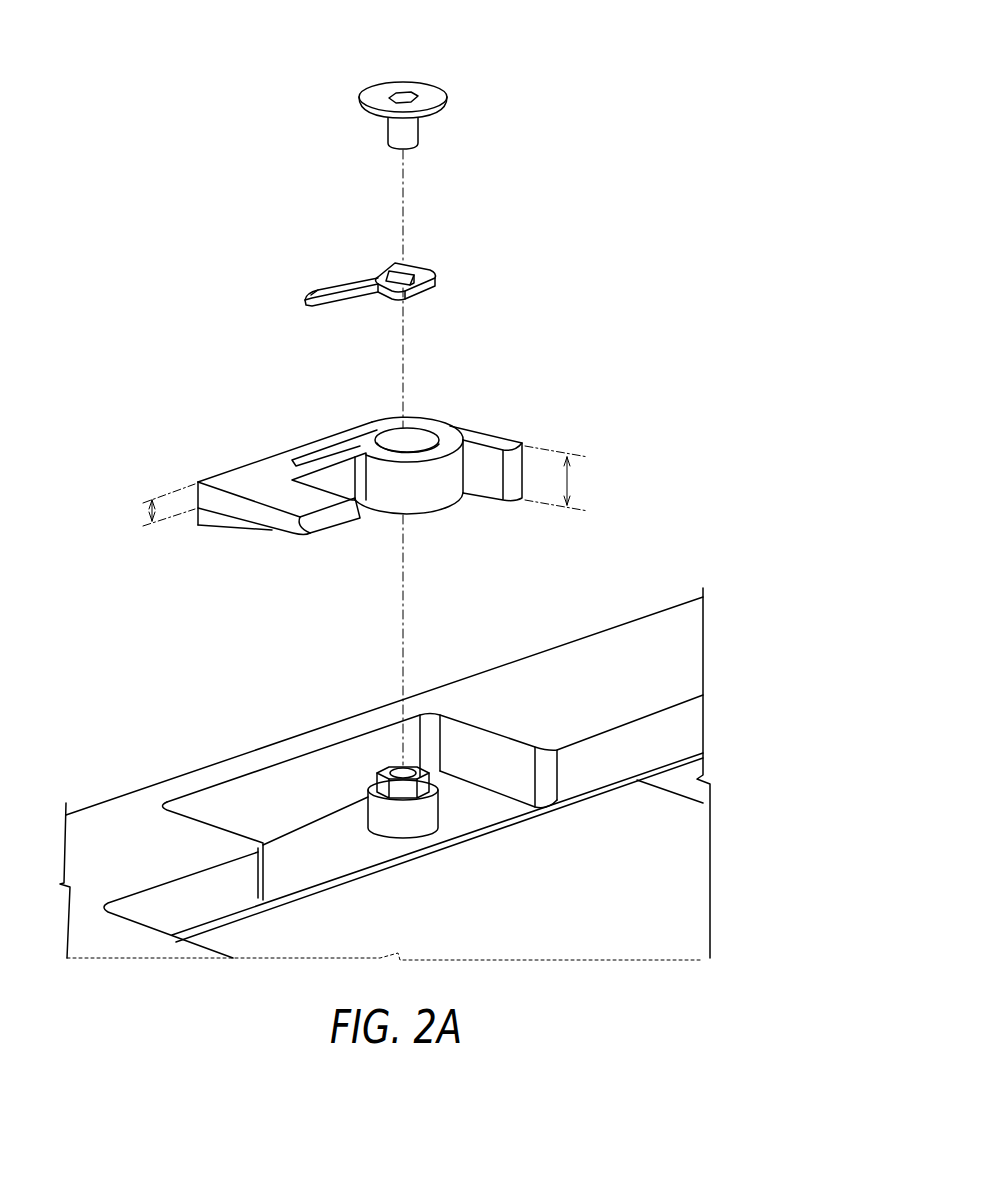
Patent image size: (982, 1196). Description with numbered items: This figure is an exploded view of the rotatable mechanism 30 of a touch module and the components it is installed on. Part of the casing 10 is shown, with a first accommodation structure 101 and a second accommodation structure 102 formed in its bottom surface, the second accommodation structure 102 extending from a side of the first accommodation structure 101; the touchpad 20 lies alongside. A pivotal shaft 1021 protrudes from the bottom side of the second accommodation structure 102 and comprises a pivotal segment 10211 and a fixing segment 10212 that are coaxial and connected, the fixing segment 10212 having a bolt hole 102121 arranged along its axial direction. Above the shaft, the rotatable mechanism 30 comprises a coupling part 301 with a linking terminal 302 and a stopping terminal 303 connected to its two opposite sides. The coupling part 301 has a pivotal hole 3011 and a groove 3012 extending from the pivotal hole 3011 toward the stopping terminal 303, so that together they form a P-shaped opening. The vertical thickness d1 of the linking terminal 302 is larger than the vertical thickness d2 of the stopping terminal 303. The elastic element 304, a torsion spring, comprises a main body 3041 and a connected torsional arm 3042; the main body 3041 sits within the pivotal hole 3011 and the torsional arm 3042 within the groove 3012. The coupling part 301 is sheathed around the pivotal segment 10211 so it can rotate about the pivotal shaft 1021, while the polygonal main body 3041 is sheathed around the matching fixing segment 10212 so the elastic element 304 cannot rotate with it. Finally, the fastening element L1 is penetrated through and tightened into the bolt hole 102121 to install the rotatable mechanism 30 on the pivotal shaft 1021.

The casing 10 is at (385, 769).
The first accommodation structure 101 is at (623, 742).
The second accommodation structure 102 is at (202, 808).
The pivotal shaft 1021 is at (358, 733).
The pivotal segment 10211 is at (375, 825).
The fixing segment 10212 is at (398, 715).
The bolt hole 102121 is at (443, 705).
The touchpad 20 is at (688, 890).
The rotatable mechanism 30 is at (70, 50).
The coupling part 301 is at (358, 454).
The pivotal hole 3011 is at (415, 432).
The groove 3012 is at (316, 452).
The linking terminal 302 is at (488, 440).
The stopping terminal 303 is at (297, 503).
The elastic element 304 is at (310, 247).
The main body 3041 is at (385, 268).
The torsional arm 3042 is at (322, 290).
The fastening element L1 is at (403, 80).
The vertical thickness of the linking terminal d1 is at (572, 480).
The vertical thickness of the stopping terminal d2 is at (148, 512).